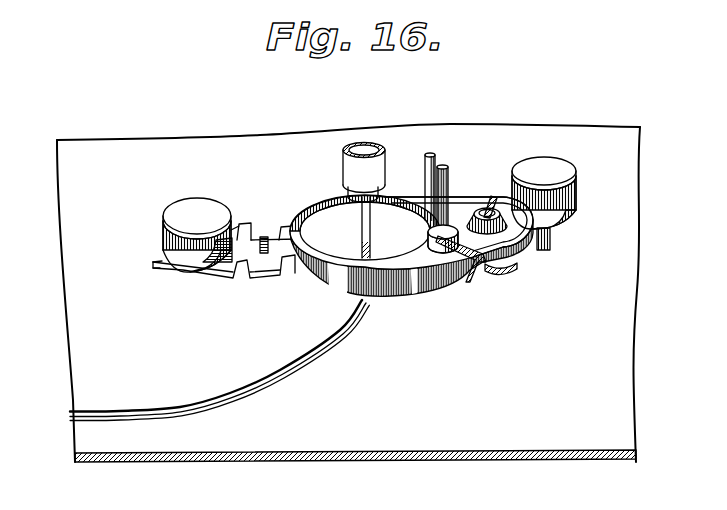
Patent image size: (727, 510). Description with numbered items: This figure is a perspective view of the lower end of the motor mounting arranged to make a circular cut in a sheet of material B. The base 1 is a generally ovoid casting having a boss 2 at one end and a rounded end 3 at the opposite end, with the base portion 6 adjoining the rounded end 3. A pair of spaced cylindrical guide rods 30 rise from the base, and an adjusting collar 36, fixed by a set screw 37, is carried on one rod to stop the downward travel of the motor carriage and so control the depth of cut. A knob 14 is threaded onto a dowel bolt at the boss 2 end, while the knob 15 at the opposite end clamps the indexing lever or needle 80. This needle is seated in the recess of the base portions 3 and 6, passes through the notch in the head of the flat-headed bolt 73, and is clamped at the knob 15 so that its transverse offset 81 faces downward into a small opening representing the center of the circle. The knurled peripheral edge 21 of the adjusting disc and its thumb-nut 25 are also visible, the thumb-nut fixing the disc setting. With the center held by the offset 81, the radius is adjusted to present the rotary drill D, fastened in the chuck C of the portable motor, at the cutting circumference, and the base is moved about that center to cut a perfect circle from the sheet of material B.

The base 1 is at (409, 282).
The boss 2 is at (552, 247).
The rounded end 3 is at (187, 272).
The base portion 6 is at (245, 277).
The knob 14 is at (566, 164).
The knob 15 is at (193, 198).
The knurled peripheral edge 21 is at (505, 271).
The thumb-nut 25 is at (494, 196).
The guide rods 30 is at (441, 166).
The adjusting collar 36 is at (429, 236).
The set screw 37 is at (483, 264).
The flat-headed bolt 73 is at (265, 236).
The indexing needle 80 is at (166, 266).
The transverse offset 81 is at (157, 276).
The sheet of material B is at (624, 424).
The chuck C is at (350, 169).
The drill bit D is at (357, 237).